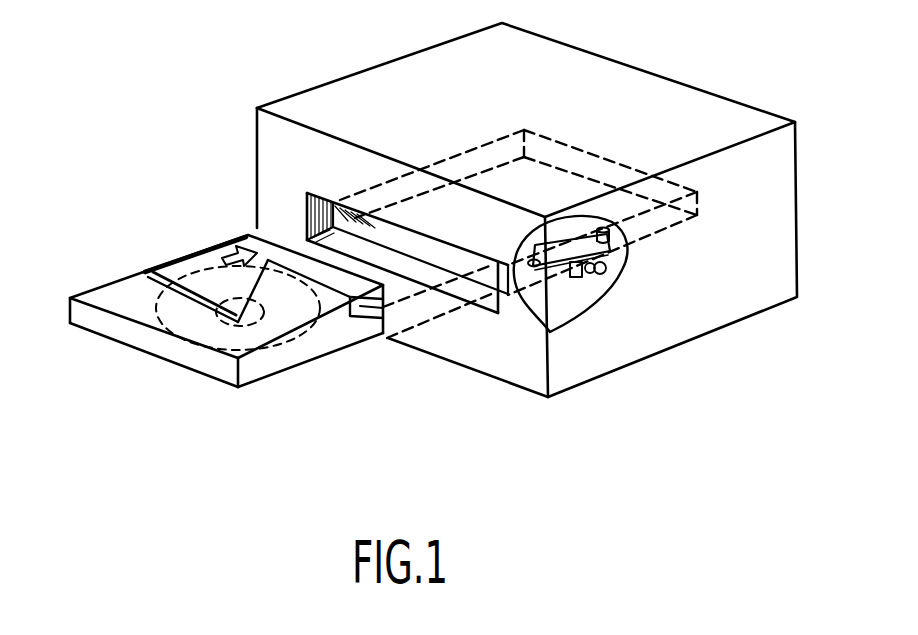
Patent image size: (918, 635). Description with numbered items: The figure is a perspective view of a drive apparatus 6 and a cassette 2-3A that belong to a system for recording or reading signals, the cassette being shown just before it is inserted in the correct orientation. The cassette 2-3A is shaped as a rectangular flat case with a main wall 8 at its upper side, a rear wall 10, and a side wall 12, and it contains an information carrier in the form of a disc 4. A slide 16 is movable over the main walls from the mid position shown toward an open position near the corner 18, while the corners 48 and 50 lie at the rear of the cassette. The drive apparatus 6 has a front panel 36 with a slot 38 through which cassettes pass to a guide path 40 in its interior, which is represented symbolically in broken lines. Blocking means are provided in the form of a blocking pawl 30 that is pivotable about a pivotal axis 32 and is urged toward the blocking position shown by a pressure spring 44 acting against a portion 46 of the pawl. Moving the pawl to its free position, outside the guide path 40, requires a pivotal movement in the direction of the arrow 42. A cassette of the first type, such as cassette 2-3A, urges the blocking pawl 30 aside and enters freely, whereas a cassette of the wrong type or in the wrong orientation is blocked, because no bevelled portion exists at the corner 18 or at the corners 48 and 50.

The drive apparatus 6 is at (642, 62).
The front panel 36 is at (478, 350).
The slot 38 is at (427, 245).
The guide path 40 is at (685, 228).
The main wall 8 is at (107, 297).
The rear wall 10 is at (115, 330).
The corner 48 is at (70, 312).
The corner 50 is at (243, 373).
The corner 18 is at (250, 232).
The slide 16 is at (307, 265).
The side wall 12 is at (348, 337).
The disc 4 is at (260, 320).
The cassette 2-3A is at (172, 256).
The arrow 42 is at (638, 280).
The blocking pawl 30 is at (551, 272).
The pivotal axis 32 is at (533, 266).
The pressure spring 44 is at (615, 248).
The portion of the blocking pawl 46 is at (577, 278).